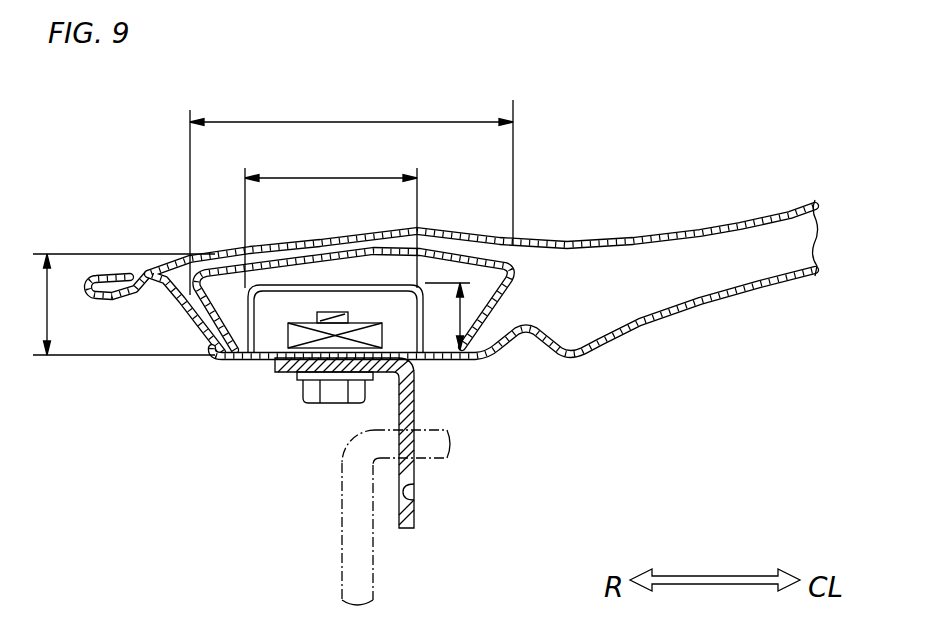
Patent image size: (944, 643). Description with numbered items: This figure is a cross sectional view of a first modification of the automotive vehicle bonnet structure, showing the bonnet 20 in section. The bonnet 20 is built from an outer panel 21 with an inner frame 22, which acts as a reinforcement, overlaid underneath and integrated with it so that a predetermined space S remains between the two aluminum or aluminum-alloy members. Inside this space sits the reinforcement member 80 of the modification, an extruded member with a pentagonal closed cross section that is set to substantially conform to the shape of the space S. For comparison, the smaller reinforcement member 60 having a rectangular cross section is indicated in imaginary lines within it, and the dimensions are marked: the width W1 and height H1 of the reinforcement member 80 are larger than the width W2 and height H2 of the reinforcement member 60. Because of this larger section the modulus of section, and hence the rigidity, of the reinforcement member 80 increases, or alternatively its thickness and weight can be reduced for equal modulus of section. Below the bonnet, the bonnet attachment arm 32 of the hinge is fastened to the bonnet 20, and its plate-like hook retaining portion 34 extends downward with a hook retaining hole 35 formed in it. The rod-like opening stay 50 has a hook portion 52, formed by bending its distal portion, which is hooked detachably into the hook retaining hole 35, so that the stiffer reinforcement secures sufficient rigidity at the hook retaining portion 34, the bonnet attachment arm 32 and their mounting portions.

The bonnet 20 is at (438, 269).
The outer panel 21 is at (682, 232).
The inner frame 22 is at (755, 282).
The reinforcement member 80 is at (220, 257).
The reinforcement member 60 is at (200, 323).
The bonnet attachment arm 32 is at (277, 367).
The hook retaining portion 34 is at (417, 515).
The hook retaining hole 35 is at (413, 487).
The opening stay 50 is at (342, 533).
The hook portion 52 is at (450, 443).
The space S is at (677, 287).
The width of the reinforcement member 80 W1 is at (351, 191).
The width of the reinforcement member 60 W2 is at (331, 215).
The height of the reinforcement member 80 H1 is at (110, 304).
The height of the reinforcement member 60 H2 is at (470, 312).